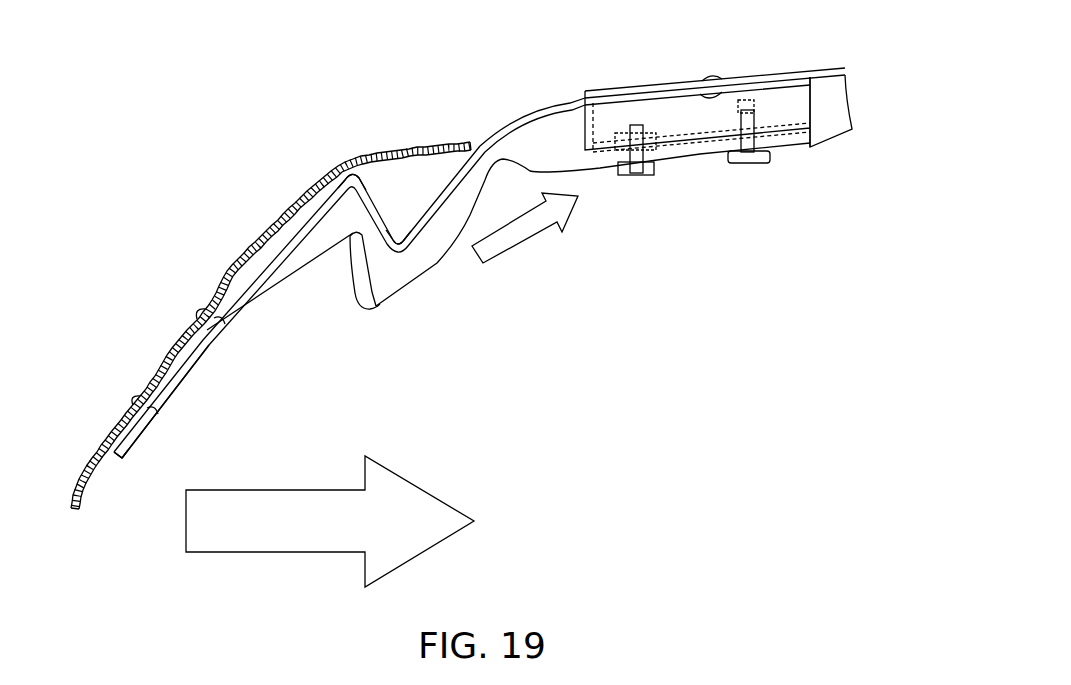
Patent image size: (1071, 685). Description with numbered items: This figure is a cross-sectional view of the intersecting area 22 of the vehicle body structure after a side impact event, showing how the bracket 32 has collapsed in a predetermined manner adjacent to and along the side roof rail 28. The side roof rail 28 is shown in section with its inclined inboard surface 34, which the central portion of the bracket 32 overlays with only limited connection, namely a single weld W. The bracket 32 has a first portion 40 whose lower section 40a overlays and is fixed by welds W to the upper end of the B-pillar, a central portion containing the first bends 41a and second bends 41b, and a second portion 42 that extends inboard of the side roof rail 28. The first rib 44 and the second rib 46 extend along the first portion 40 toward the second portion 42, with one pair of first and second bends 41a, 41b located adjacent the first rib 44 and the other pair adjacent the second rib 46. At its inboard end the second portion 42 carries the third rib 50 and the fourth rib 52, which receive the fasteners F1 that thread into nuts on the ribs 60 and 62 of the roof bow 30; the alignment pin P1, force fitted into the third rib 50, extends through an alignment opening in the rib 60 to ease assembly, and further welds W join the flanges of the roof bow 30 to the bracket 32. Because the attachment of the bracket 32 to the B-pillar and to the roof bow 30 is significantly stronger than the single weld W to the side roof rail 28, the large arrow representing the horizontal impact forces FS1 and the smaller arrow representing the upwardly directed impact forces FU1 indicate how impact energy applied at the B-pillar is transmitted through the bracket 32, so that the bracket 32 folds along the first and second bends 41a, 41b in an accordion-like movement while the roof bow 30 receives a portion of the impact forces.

The intersecting area 22 is at (360, 97).
The side roof rail 28 is at (256, 215).
The inboard surface 34 is at (250, 262).
The first bends 41a is at (351, 184).
The second bends 41b is at (398, 250).
The first portion 40 is at (190, 364).
The lower section 40a is at (130, 449).
The welds W is at (222, 326).
The first rib 44 is at (394, 313).
The second rib 46 is at (370, 294).
The bracket 32 is at (443, 270).
The third rib 50 is at (532, 106).
The fourth rib 52 is at (546, 146).
The roof bow 30 is at (781, 56).
The second portion 42 is at (666, 116).
The rib 60 is at (855, 129).
The rib 62 is at (828, 102).
The fasteners F1 is at (639, 176).
The alignment pin P1 is at (752, 164).
The upwardly directed impact forces FU1 is at (520, 249).
The horizontal impact forces FS1 is at (258, 553).